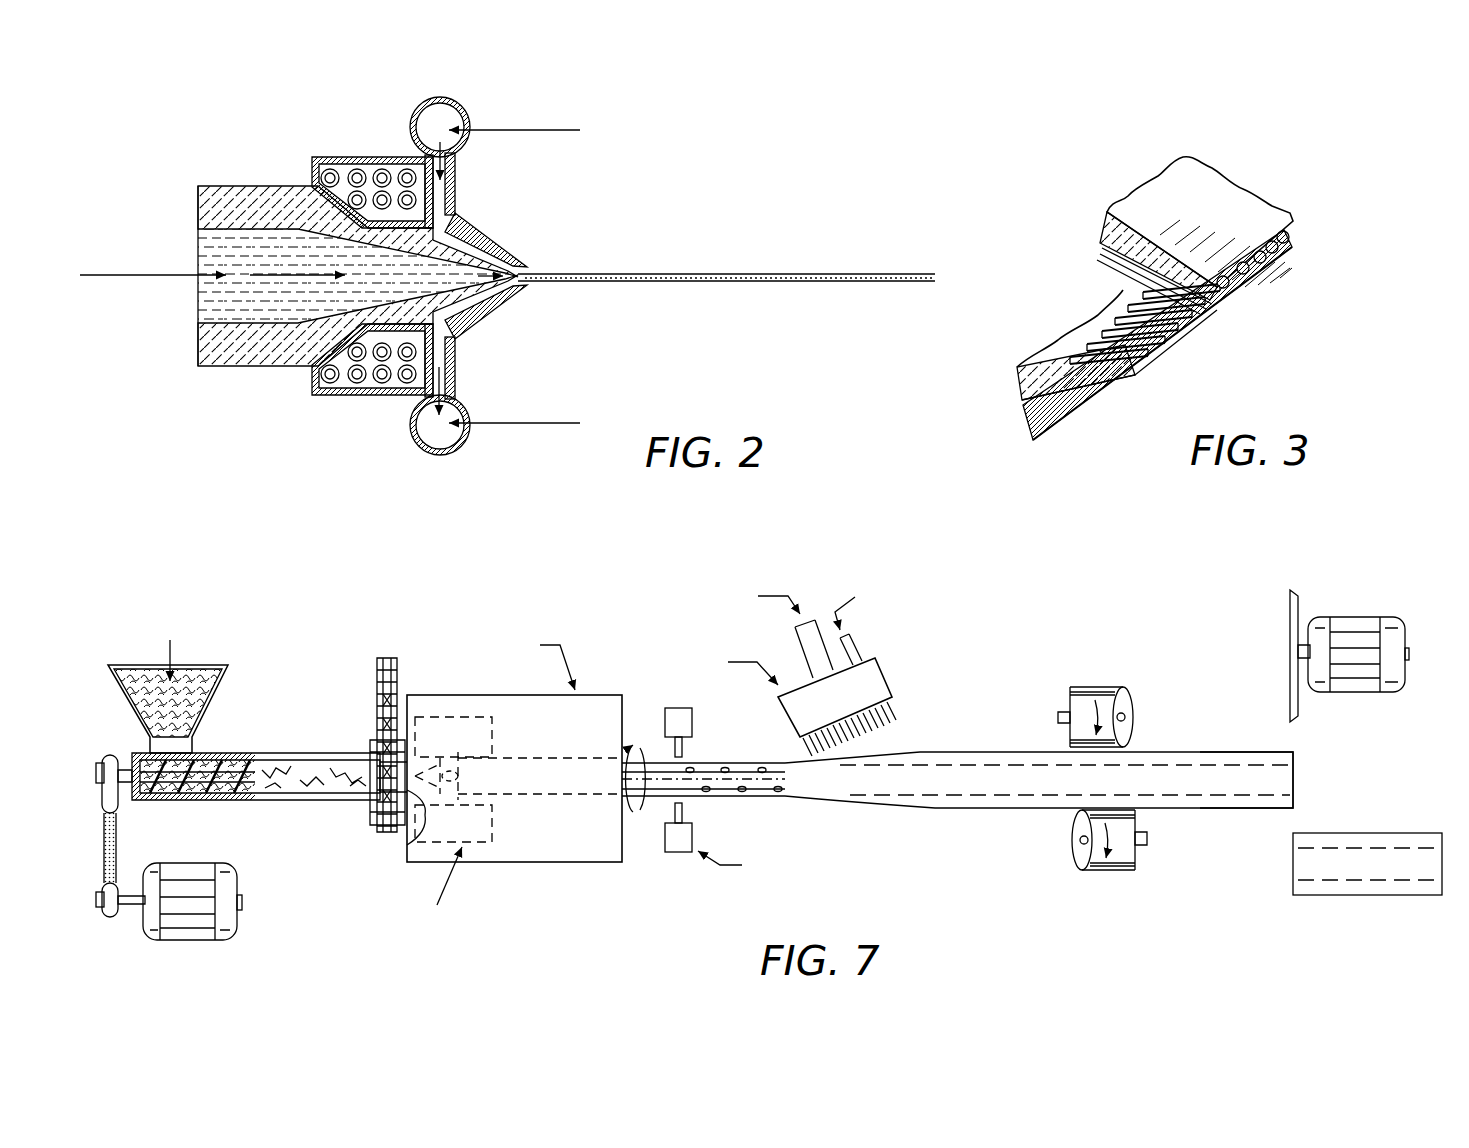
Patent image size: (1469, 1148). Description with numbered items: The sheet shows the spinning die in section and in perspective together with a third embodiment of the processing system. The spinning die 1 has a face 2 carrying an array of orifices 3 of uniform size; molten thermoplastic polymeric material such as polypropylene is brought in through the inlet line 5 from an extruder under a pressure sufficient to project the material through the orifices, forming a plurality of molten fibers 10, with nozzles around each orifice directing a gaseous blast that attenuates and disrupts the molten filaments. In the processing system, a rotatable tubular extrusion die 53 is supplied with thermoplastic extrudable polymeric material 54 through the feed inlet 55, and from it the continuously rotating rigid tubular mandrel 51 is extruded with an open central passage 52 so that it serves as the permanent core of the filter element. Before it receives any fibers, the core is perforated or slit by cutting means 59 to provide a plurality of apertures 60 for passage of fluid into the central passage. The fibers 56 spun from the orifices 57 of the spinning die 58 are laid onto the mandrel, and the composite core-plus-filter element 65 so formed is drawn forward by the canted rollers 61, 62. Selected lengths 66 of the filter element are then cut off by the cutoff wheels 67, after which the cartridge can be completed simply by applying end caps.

In FIG. 2, the spinning die 1 is at (482, 209).
In FIG. 3, the spinning die 1 is at (1104, 409).
In FIG. 2, the face 2 is at (498, 262).
In FIG. 3, the face 2 is at (1262, 207).
In FIG. 2, the orifices 3 is at (528, 284).
In FIG. 3, the orifices 3 is at (1190, 314).
In FIG. 2, the inlet line 5 is at (199, 245).
In FIG. 2, the molten fibers 10 is at (668, 272).
In FIG. 7, the mandrel 51 is at (652, 792).
In FIG. 7, the central passage 52 is at (1278, 778).
In FIG. 7, the tubular extrusion die 53 is at (518, 797).
In FIG. 7, the thermoplastic extrudable polymeric material 54 is at (217, 695).
In FIG. 7, the feed inlet 55 is at (408, 840).
In FIG. 7, the fibers 56 is at (887, 723).
In FIG. 7, the orifices 57 is at (874, 700).
In FIG. 7, the spinning die 58 is at (878, 670).
In FIG. 7, the cutting means 59 is at (688, 725).
In FIG. 7, the apertures 60 is at (773, 792).
In FIG. 7, the canted roller 61 is at (1124, 699).
In FIG. 7, the canted roller 62 is at (1078, 858).
In FIG. 7, the composite core-plus-filter element 65 is at (1209, 742).
In FIG. 7, the selected lengths 66 is at (1383, 883).
In FIG. 7, the cutoff wheels 67 is at (1288, 613).